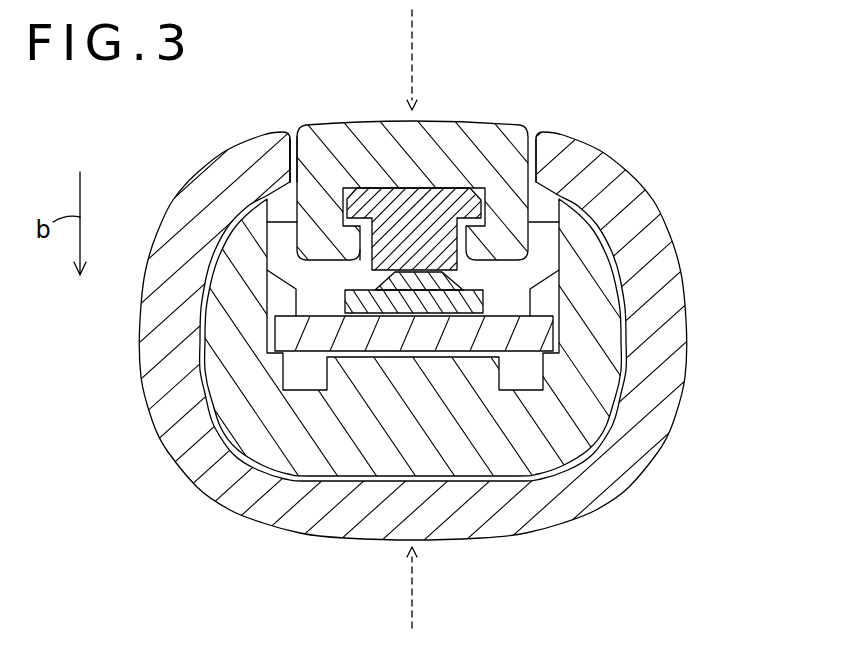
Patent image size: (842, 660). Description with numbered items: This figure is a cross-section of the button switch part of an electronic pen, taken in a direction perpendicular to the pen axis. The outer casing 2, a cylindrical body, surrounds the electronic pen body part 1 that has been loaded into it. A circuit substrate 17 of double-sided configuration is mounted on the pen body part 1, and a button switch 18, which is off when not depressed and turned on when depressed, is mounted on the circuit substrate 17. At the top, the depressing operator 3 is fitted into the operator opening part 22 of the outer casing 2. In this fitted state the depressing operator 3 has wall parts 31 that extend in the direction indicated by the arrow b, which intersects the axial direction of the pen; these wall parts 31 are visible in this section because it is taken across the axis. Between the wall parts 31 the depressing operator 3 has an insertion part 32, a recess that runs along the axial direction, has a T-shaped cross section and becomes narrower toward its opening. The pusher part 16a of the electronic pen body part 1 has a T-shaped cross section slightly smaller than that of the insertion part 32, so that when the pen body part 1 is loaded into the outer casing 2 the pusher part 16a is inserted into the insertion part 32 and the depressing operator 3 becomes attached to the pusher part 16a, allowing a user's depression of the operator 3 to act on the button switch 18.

The electronic pen body part 1 is at (460, 470).
The outer casing 2 is at (673, 243).
The depressing operator 3 is at (365, 121).
The pusher part 16a is at (434, 200).
The circuit substrate 17 is at (379, 340).
The button switch 18 is at (468, 302).
The operator opening part 22 is at (293, 131).
The wall parts 31 is at (290, 203).
The insertion part 32 is at (362, 266).